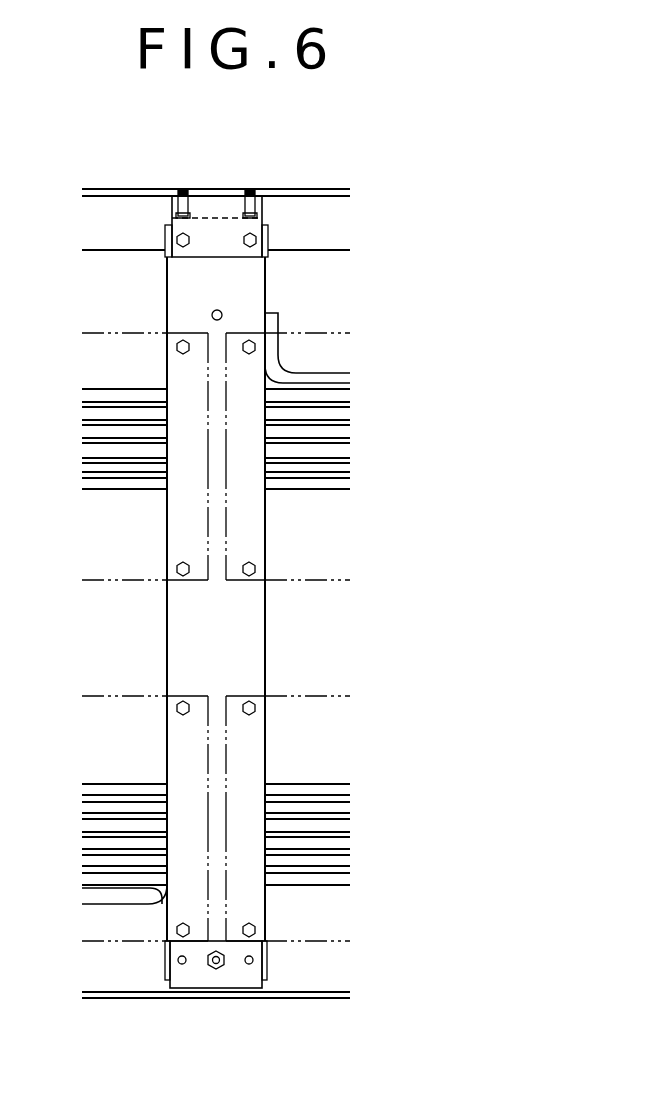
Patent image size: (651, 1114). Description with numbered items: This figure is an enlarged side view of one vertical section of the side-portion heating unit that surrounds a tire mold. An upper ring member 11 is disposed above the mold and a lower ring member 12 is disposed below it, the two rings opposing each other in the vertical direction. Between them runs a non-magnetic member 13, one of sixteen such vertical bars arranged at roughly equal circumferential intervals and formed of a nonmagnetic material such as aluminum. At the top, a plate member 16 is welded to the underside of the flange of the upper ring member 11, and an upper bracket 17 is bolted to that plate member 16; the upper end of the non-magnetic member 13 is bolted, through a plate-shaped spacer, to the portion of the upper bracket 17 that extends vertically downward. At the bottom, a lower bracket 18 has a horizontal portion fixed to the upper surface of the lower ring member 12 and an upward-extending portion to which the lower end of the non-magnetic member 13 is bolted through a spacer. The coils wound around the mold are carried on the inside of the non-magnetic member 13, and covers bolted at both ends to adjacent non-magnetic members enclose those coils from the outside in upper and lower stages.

The upper ring member 11 is at (315, 189).
The lower ring member 12 is at (303, 999).
The non-magnetic member 13 is at (167, 638).
The plate member 16 is at (172, 200).
The upper bracket 17 is at (218, 258).
The lower bracket 18 is at (165, 982).